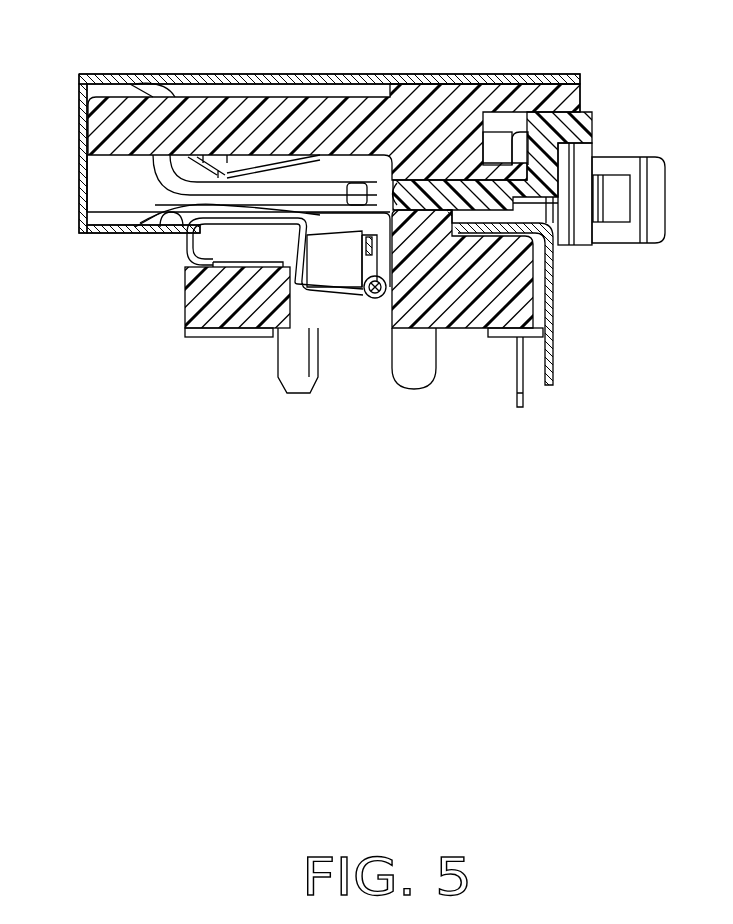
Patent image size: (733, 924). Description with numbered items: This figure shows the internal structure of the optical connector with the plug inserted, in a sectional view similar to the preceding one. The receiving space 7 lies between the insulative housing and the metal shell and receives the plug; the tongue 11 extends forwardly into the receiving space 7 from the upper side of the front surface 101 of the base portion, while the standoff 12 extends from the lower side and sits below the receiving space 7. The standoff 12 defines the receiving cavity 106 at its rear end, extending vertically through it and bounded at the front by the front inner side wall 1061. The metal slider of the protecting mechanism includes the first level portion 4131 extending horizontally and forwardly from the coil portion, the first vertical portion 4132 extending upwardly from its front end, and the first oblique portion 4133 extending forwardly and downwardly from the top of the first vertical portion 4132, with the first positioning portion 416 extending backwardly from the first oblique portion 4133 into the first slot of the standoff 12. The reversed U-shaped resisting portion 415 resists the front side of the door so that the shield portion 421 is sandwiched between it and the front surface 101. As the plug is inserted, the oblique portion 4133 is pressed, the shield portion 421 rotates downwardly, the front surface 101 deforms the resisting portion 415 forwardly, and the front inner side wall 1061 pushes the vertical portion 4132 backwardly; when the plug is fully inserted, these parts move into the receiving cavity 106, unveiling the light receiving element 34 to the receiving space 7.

The tongue 11 is at (125, 130).
The receiving space 7 is at (103, 187).
The light receiving element 34 is at (385, 245).
The first oblique portion 4133 is at (143, 215).
The standoff 12 is at (188, 284).
The first positioning portion 416 is at (236, 262).
The receiving cavity 106 is at (310, 313).
The front inner side wall 1061 is at (250, 300).
The first vertical portion 4132 is at (293, 253).
The shield portion 421 is at (377, 238).
The resisting portion 415 is at (362, 232).
The first level portion 4131 is at (340, 294).
The front surface 101 is at (392, 307).